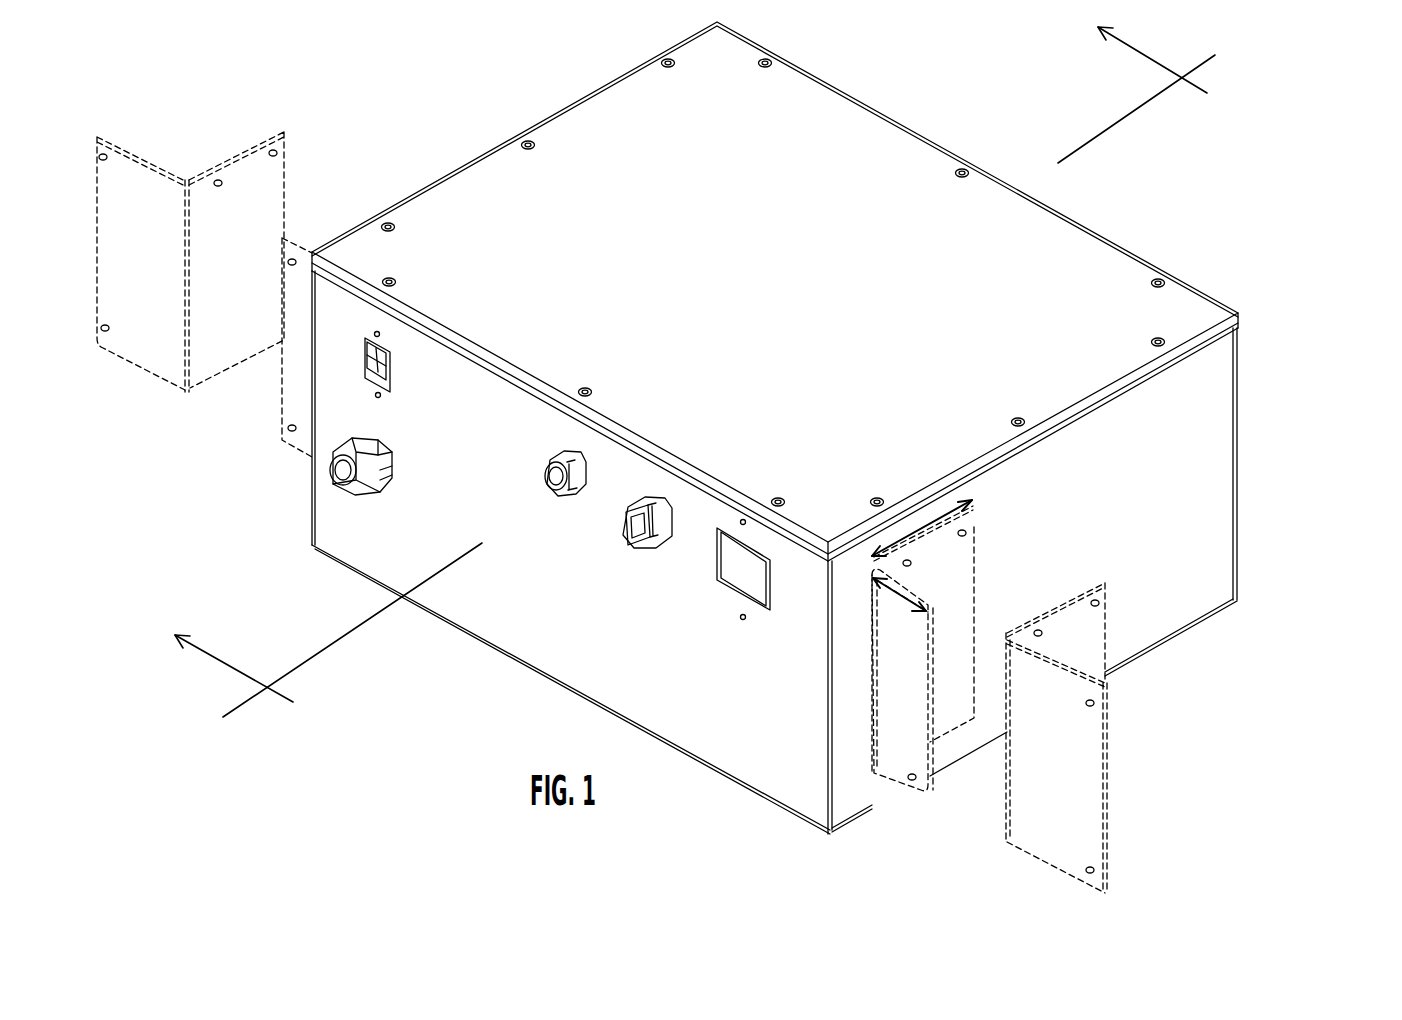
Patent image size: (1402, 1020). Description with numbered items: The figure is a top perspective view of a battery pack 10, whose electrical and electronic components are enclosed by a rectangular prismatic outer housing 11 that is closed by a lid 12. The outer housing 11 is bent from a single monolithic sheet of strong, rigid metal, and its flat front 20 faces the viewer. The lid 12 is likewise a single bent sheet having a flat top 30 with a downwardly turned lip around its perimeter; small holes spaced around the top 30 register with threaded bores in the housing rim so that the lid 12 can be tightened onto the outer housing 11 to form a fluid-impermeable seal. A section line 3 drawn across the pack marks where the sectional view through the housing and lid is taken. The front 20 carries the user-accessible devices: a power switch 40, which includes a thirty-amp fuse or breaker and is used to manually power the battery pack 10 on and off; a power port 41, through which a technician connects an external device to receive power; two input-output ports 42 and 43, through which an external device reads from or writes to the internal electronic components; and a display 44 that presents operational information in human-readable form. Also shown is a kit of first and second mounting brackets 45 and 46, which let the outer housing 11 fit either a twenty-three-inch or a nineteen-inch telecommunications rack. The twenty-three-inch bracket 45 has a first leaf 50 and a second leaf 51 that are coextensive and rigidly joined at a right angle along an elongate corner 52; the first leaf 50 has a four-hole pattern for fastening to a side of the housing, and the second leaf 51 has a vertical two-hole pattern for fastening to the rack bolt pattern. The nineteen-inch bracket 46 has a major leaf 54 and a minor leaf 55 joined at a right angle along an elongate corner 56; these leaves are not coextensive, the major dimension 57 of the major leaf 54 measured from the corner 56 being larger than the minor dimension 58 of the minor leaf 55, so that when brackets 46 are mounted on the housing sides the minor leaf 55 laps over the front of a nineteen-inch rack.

The section line 3 is at (704, 382).
The battery pack 10 is at (842, 428).
The outer housing 11 is at (1232, 373).
The lid 12 is at (1205, 306).
The front 20 is at (547, 633).
The top 30 is at (848, 130).
The power switch 40 is at (370, 368).
The power port 41 is at (357, 488).
The I/O port 42 is at (565, 497).
The I/O port 43 is at (637, 550).
The display 44 is at (740, 580).
The first mounting bracket 45 is at (1072, 700).
The second mounting bracket 46 is at (924, 607).
The first leaf 50 is at (1097, 633).
The second leaf 51 is at (1092, 780).
The corner 52 is at (1005, 830).
The major leaf 54 is at (962, 574).
The minor leaf 55 is at (898, 690).
The corner 56 is at (872, 667).
The major dimension 57 is at (918, 528).
The minor dimension 58 is at (900, 598).